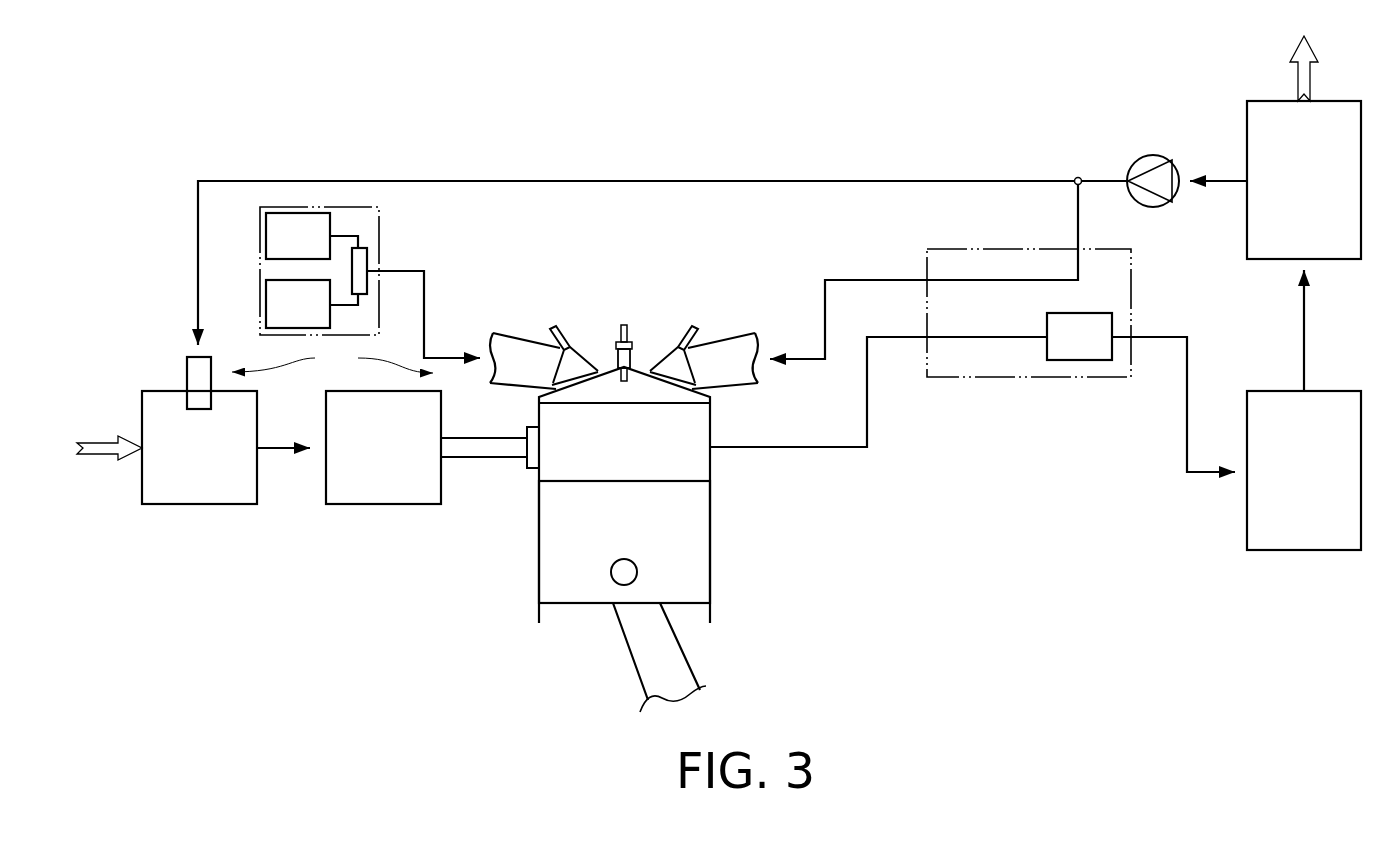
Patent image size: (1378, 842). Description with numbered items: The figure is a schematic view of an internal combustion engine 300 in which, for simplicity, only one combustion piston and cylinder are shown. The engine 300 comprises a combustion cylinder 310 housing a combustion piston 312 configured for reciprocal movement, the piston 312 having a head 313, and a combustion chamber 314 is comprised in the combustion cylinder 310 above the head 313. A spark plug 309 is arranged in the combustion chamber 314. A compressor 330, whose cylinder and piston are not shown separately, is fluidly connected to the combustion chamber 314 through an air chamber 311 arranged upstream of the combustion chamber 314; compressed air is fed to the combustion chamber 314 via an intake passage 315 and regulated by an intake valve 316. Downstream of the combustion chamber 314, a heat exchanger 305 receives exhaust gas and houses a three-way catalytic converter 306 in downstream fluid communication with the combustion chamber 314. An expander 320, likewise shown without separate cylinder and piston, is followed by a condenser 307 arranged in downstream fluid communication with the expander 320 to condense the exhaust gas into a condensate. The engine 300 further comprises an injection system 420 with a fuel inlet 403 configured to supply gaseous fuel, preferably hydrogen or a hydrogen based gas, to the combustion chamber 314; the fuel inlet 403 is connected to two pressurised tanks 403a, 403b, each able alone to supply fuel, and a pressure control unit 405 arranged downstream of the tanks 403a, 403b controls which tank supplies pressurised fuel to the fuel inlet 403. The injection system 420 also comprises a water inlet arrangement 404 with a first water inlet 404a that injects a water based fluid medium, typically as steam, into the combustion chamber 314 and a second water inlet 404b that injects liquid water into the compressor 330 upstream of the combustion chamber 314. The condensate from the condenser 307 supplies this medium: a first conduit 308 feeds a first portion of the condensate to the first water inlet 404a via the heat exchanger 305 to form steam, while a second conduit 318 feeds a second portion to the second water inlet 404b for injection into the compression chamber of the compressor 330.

The internal combustion engine 300 is at (273, 560).
The heat exchanger 305 is at (957, 374).
The three-way catalytic converter 306 is at (1085, 361).
The condenser 307 is at (1262, 101).
The first conduit 308 is at (1077, 217).
The spark plug 309 is at (617, 360).
The combustion cylinder 310 is at (686, 489).
The air chamber 311 is at (378, 505).
The combustion piston 312 is at (577, 604).
The head 313 is at (668, 533).
The combustion chamber 314 is at (711, 466).
The intake passage 315 is at (482, 460).
The intake valve 316 is at (532, 470).
The second conduit 318 is at (640, 180).
The expander 320 is at (1292, 551).
The compressor 330 is at (196, 505).
The fuel inlet 403 is at (547, 368).
The pressurised tank 403a is at (265, 237).
The pressurised tank 403b is at (265, 305).
The water inlet arrangement 404 is at (650, 325).
The first water inlet 404a is at (703, 370).
The second water inlet 404b is at (186, 373).
The pressure control unit 405 is at (351, 272).
The injection system 420 is at (332, 359).